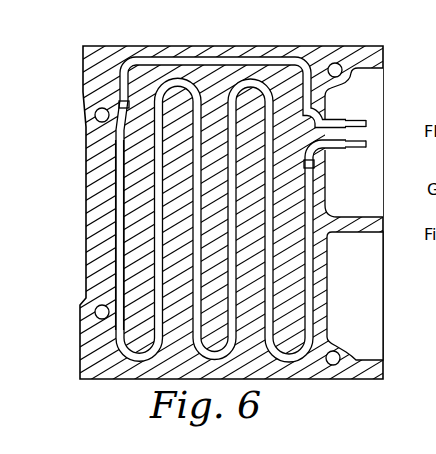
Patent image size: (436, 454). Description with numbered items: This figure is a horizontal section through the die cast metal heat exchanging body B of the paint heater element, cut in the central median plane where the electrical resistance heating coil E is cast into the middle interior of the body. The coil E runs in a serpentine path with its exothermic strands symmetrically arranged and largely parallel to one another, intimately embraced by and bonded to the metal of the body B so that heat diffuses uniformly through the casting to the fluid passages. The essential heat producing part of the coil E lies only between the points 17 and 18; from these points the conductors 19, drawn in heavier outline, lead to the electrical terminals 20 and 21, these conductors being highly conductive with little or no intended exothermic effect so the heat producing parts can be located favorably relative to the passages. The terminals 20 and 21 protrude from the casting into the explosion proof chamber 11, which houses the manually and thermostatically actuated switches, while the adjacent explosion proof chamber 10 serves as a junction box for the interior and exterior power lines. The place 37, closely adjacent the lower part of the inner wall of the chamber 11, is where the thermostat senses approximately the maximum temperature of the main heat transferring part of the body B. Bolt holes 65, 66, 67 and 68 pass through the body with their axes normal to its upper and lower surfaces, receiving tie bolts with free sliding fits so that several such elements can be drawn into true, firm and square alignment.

The explosion proof chamber 10 is at (358, 281).
The explosion proof chamber 11 is at (363, 93).
The point 17 is at (119, 104).
The point 18 is at (316, 166).
The conductors 19 is at (265, 59).
The electrical terminal 20 is at (361, 121).
The electrical terminal 21 is at (370, 146).
The place 37 is at (327, 208).
The bolt hole 65 is at (334, 366).
The bolt hole 66 is at (93, 318).
The bolt hole 67 is at (95, 116).
The bolt hole 68 is at (341, 64).
The body B is at (86, 234).
The electrical resistance heating coil E is at (116, 186).